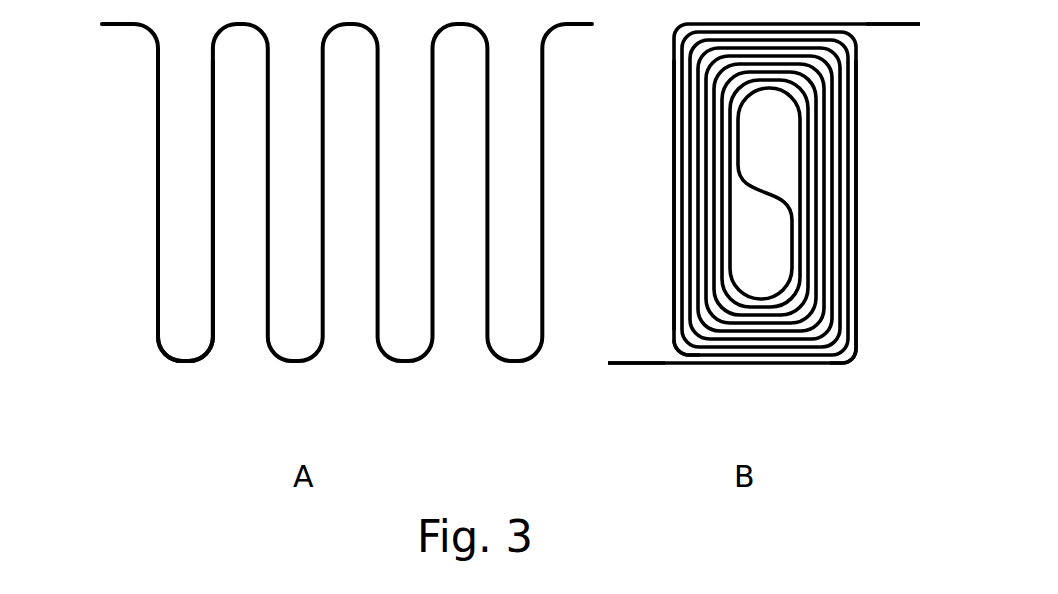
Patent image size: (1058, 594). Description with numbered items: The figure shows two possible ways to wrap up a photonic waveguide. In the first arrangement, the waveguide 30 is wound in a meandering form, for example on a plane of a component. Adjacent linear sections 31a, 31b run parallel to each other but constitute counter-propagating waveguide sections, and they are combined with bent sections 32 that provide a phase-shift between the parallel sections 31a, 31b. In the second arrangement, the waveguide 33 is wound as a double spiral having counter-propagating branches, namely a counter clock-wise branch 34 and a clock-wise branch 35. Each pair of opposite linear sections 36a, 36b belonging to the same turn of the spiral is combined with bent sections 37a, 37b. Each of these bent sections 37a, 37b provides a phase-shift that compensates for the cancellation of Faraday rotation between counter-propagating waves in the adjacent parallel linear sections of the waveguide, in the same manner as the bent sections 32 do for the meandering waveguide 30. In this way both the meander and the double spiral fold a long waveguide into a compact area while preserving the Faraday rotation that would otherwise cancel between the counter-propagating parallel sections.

The waveguide 30 is at (125, 138).
The linear section 31a is at (157, 240).
The linear section 31b is at (213, 255).
The bent section 32 is at (182, 362).
The waveguide 33 is at (862, 213).
The counter clock-wise branch 34 is at (660, 367).
The clock-wise branch 35 is at (867, 28).
The linear section 36a is at (675, 243).
The linear section 36b is at (835, 270).
The bent section 37a is at (682, 340).
The bent section 37b is at (825, 360).